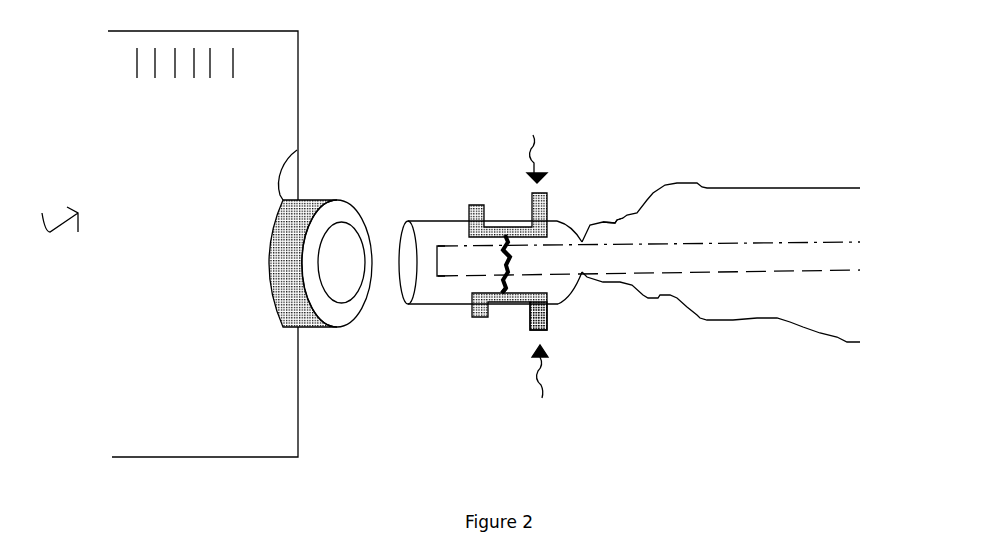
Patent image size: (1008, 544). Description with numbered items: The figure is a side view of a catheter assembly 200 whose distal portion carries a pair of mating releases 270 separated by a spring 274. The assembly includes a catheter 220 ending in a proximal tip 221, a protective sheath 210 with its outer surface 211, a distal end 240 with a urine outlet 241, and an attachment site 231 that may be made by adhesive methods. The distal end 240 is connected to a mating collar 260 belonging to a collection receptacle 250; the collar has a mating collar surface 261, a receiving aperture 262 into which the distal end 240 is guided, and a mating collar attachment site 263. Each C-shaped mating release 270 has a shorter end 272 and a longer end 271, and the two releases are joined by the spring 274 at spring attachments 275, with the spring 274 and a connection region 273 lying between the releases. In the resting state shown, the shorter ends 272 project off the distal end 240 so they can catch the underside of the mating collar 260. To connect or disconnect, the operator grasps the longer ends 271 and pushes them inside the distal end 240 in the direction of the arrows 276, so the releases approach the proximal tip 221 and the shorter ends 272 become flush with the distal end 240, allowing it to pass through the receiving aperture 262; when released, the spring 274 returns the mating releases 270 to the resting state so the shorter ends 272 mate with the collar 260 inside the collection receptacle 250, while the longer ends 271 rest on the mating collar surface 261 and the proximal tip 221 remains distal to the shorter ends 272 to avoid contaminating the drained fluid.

The catheter assembly 200 is at (51, 211).
The protective sheath 210 is at (742, 188).
The pipe outer surface 211 is at (615, 223).
The catheter 220 is at (773, 258).
The proximal tip 221 is at (448, 265).
The attachment site 231 is at (563, 194).
The distal end 240 is at (423, 243).
The urine outlet 241 is at (407, 277).
The collection receptacle 250 is at (267, 110).
The mating collar 260 is at (298, 313).
The mating collar surface 261 is at (338, 302).
The receiving aperture 262 is at (335, 262).
The mating collar attachment site 263 is at (287, 163).
The mating releases 270 is at (505, 237).
The longer ends 271 is at (545, 322).
The shorter ends 272 is at (478, 210).
The lower clamp 273 is at (527, 307).
The spring 274 is at (508, 253).
The spring attachments 275 is at (500, 292).
The arrows 276 is at (545, 385).